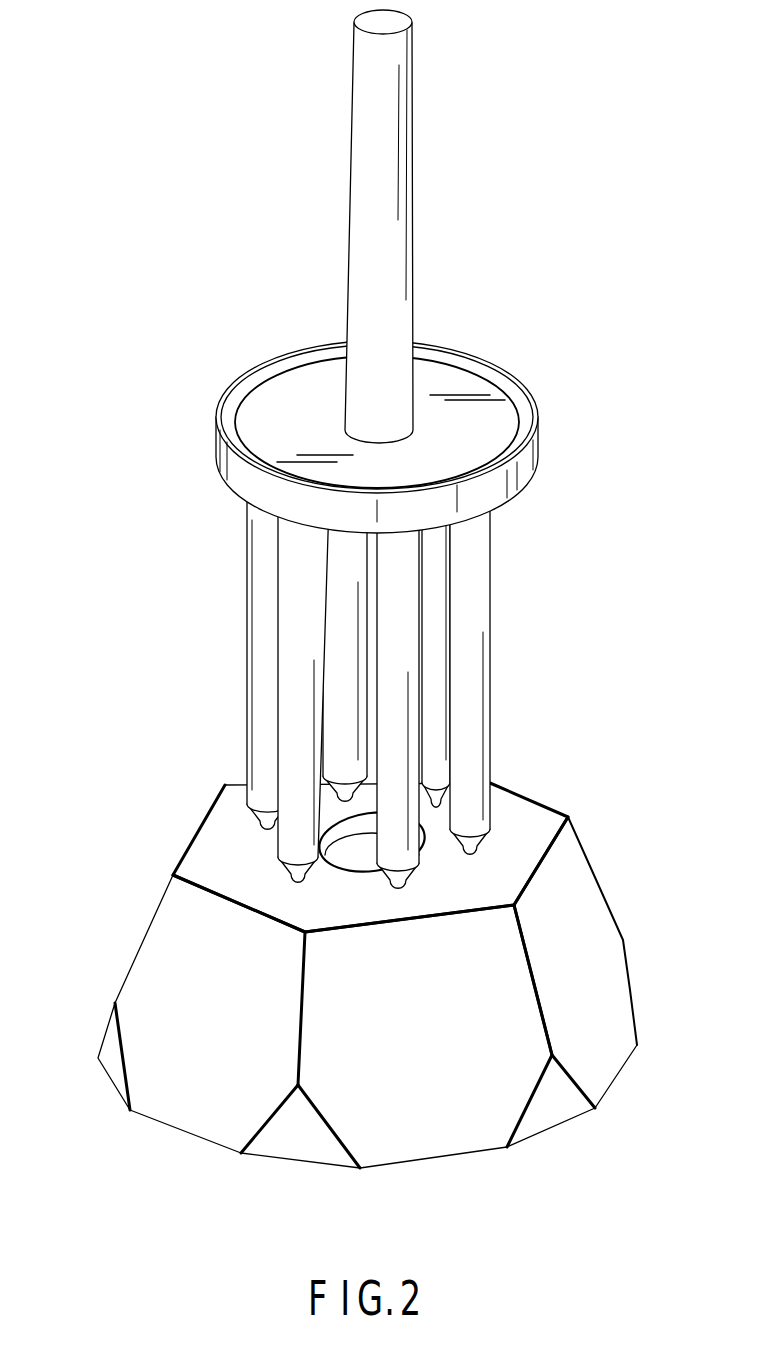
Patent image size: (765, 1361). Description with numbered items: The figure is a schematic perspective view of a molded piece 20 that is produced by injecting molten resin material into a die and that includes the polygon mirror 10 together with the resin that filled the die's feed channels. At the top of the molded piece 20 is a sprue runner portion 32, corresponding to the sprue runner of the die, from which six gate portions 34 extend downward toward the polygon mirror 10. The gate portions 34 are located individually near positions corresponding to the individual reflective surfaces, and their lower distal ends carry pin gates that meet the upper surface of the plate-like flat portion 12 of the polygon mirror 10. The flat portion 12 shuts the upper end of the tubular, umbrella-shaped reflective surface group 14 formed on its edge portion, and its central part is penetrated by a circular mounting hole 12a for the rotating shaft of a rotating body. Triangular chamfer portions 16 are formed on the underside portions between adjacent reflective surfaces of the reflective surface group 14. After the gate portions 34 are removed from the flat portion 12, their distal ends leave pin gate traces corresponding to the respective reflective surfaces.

The polygon mirror 10 is at (355, 621).
The flat portion 12 is at (364, 873).
The mounting hole 12a is at (363, 855).
The reflective surface group 14 is at (341, 992).
The chamfer portion 16 is at (298, 1138).
The molded piece 20 is at (381, 504).
The sprue runner portion 32 is at (209, 350).
The gate portion 34 is at (439, 734).